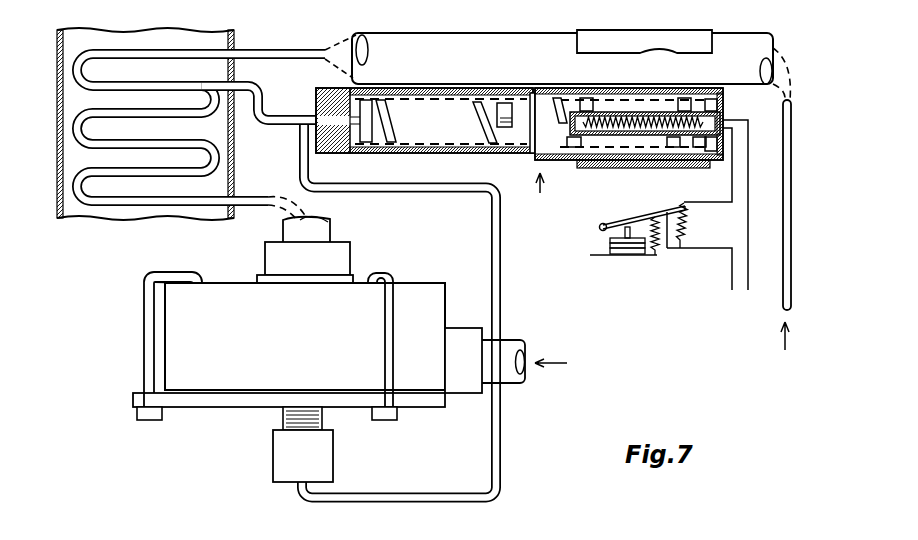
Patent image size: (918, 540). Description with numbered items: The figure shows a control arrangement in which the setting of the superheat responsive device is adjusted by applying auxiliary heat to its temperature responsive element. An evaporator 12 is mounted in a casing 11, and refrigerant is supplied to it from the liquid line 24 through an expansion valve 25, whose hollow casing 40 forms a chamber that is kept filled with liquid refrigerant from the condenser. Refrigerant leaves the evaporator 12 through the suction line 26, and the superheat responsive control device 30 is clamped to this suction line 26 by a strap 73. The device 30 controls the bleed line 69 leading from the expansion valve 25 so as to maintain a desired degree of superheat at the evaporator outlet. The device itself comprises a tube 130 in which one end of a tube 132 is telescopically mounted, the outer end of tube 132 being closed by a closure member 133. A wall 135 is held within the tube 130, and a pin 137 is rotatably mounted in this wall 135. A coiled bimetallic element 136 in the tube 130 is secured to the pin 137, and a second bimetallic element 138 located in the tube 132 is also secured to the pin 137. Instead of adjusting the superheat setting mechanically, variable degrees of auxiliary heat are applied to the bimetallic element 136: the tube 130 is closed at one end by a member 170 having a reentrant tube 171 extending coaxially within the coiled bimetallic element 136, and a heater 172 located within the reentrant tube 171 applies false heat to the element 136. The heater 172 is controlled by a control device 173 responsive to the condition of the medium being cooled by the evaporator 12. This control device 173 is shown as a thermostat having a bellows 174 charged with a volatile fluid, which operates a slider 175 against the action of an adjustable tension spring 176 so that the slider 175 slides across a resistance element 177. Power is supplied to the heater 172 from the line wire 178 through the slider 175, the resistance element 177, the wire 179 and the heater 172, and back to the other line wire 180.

The casing 11 is at (57, 141).
The evaporator 12 is at (140, 206).
The liquid line 24 is at (245, 205).
The expansion valve 25 is at (307, 349).
The suction line 26 is at (271, 54).
The superheat responsive controller 30 is at (540, 193).
The hollow casing 40 is at (313, 351).
The bleed line 69 is at (271, 121).
The strap 73 is at (617, 39).
The tube 130 is at (540, 128).
The tube 132 is at (447, 153).
The closure member 133 is at (321, 153).
The wall 135 is at (538, 89).
The bimetallic element 136 is at (570, 138).
The pin 137 is at (522, 128).
The bimetallic element 138 is at (381, 153).
The member 170 is at (724, 97).
The reentrant tube 171 is at (615, 167).
The heater 172 is at (633, 117).
The control device 173 is at (648, 247).
The bellows 174 is at (609, 243).
The slider 175 is at (637, 217).
The adjustable tension spring 176 is at (656, 252).
The resistance element 177 is at (686, 225).
The line wire 178 is at (732, 279).
The wire 179 is at (732, 185).
The line wire 180 is at (748, 279).